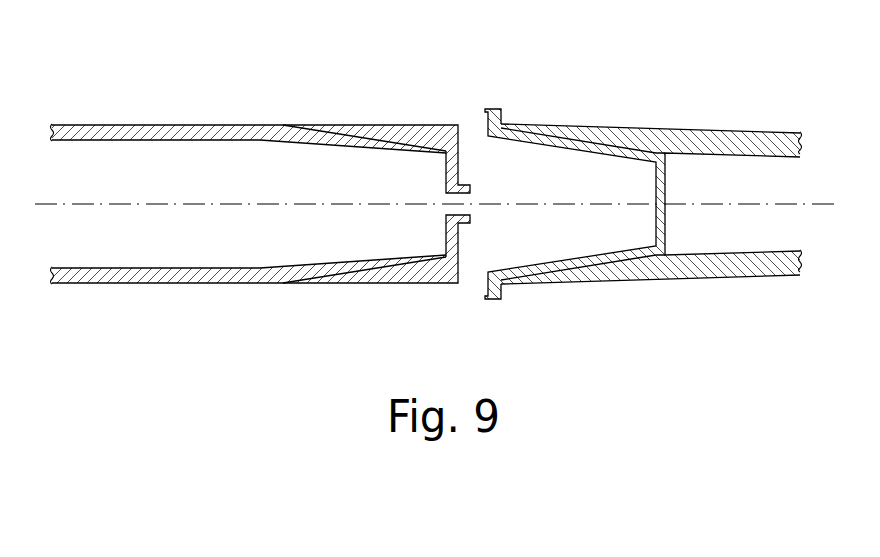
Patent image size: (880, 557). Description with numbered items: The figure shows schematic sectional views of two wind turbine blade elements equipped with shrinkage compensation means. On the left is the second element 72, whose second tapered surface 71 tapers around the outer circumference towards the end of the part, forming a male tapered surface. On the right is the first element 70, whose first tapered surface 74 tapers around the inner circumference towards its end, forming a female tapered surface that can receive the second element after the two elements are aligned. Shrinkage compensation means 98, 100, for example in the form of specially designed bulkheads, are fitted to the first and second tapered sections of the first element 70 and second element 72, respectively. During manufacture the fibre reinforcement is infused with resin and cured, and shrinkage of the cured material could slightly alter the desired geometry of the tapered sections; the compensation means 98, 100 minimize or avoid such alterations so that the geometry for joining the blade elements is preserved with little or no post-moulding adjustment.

The first element 70 is at (670, 303).
The second tapered surface 71 is at (363, 272).
The second element 72 is at (187, 303).
The first tapered surface 74 is at (583, 270).
The shrinkage compensation means 98 is at (565, 128).
The shrinkage compensation means 100 is at (421, 128).